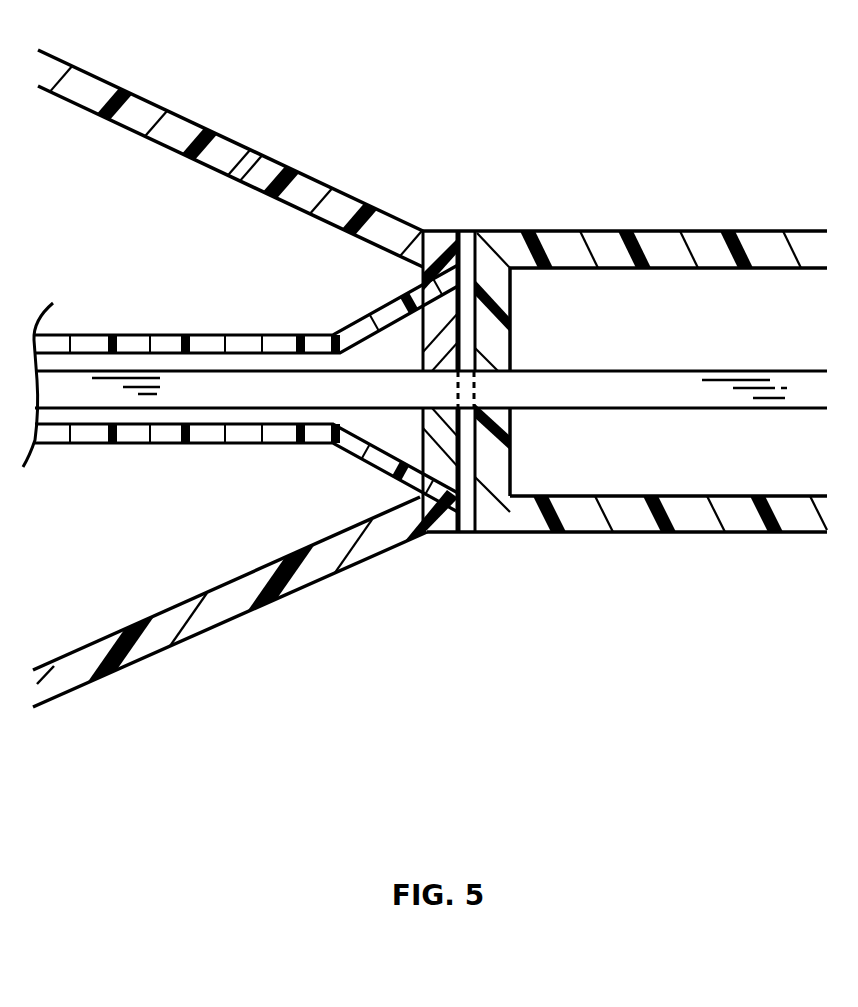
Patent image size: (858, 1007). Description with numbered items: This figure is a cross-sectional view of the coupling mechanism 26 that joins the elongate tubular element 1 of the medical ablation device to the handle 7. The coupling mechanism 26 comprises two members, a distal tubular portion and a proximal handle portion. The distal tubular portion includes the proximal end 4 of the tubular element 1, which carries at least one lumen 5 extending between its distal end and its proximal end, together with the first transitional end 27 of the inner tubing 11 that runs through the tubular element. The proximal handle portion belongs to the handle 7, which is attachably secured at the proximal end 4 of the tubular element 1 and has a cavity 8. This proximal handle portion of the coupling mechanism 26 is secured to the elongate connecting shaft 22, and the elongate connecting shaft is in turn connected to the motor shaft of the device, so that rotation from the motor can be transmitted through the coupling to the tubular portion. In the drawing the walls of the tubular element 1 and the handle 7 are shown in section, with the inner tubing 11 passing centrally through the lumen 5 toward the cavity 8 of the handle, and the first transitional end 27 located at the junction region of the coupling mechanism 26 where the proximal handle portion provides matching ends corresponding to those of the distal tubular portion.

The elongate tubular element 1 is at (707, 232).
The proximal end 4 is at (483, 228).
The lumen 5 is at (637, 467).
The handle 7 is at (188, 114).
The cavity 8 is at (205, 220).
The inner tubing 11 is at (745, 370).
The elongate connecting shaft 22 is at (245, 337).
The coupling mechanism 26 is at (514, 584).
The first transitional end 27 is at (483, 378).